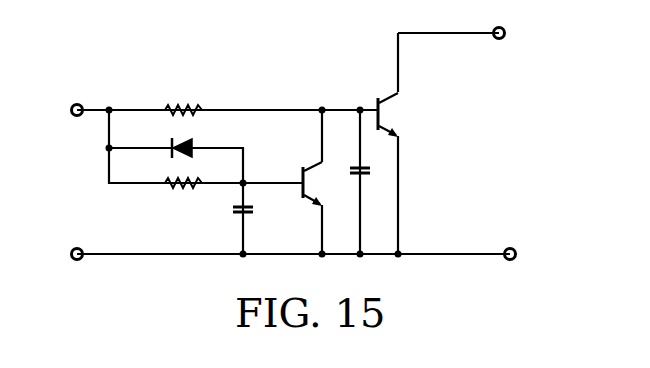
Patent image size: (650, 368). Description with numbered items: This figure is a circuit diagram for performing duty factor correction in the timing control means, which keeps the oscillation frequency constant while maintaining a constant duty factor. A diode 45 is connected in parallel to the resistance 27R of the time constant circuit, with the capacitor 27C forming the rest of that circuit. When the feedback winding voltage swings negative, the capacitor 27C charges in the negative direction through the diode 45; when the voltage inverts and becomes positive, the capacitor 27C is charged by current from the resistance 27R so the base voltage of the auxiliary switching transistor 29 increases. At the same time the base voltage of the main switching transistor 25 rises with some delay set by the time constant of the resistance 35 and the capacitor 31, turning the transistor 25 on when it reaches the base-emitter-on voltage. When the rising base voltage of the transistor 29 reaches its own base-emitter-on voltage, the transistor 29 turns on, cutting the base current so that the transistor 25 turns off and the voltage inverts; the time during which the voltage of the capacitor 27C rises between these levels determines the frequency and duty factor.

The resistance 35 is at (184, 108).
The diode 45 is at (193, 140).
The resistance 27R is at (182, 186).
The capacitor 27C is at (230, 207).
The auxiliary switching transistor 29 is at (308, 178).
The capacitor 31 is at (371, 172).
The main switching transistor 25 is at (392, 100).